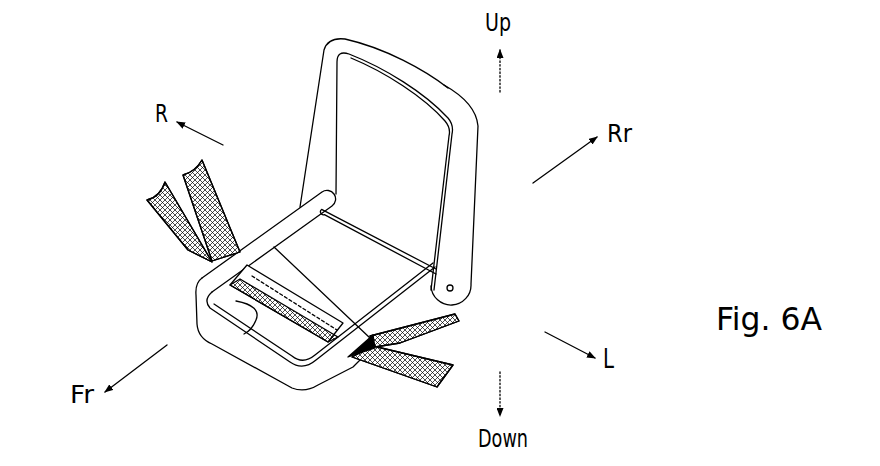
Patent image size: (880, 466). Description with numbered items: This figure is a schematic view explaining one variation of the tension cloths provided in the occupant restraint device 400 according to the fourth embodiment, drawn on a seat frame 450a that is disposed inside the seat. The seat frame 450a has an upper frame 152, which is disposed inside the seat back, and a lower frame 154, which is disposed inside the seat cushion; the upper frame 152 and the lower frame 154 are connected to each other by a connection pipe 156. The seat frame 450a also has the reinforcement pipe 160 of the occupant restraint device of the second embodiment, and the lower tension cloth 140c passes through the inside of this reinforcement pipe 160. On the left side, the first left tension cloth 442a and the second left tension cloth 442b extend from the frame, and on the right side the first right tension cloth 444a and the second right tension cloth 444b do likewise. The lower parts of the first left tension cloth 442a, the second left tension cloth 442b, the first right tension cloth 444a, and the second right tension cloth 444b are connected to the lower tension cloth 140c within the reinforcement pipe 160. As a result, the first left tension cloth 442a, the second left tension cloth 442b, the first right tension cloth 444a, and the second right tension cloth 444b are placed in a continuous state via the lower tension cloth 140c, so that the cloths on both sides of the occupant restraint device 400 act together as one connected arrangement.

The occupant restraint device 400 is at (281, 69).
The upper frame 152 is at (397, 63).
The lower frame 154 is at (268, 363).
The connection pipe 156 is at (372, 236).
The reinforcement pipe 160 is at (257, 312).
The lower tension cloth 140c is at (292, 285).
The seat frame 450a is at (490, 141).
The first left tension cloth 442a is at (397, 373).
The second left tension cloth 442b is at (440, 338).
The first right tension cloth 444a is at (163, 222).
The second right tension cloth 444b is at (221, 191).